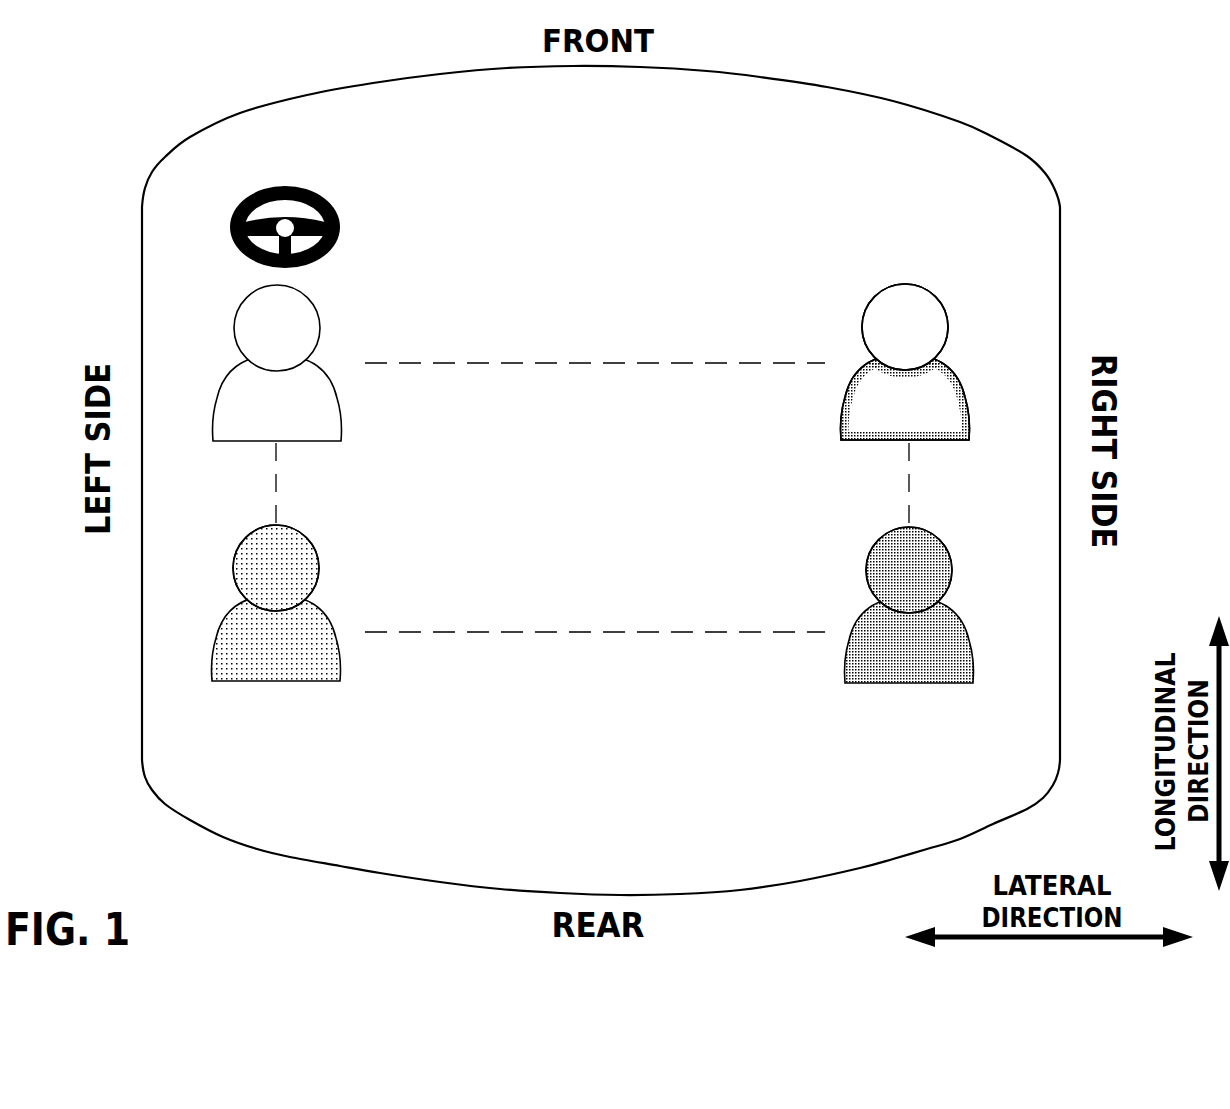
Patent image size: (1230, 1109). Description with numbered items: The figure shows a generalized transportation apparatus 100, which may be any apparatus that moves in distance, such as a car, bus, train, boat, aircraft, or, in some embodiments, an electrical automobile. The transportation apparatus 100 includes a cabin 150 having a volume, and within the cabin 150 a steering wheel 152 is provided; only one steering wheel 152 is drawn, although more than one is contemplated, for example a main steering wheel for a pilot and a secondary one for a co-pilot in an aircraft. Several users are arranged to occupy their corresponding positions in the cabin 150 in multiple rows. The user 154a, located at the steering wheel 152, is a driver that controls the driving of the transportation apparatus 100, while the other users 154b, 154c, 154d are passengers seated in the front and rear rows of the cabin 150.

The transportation apparatus 100 is at (942, 114).
The cabin 150 is at (622, 116).
The steering wheel 152 is at (340, 227).
The user 154a is at (318, 315).
The user 154b is at (945, 306).
The user 154c is at (318, 554).
The user 154d is at (949, 555).